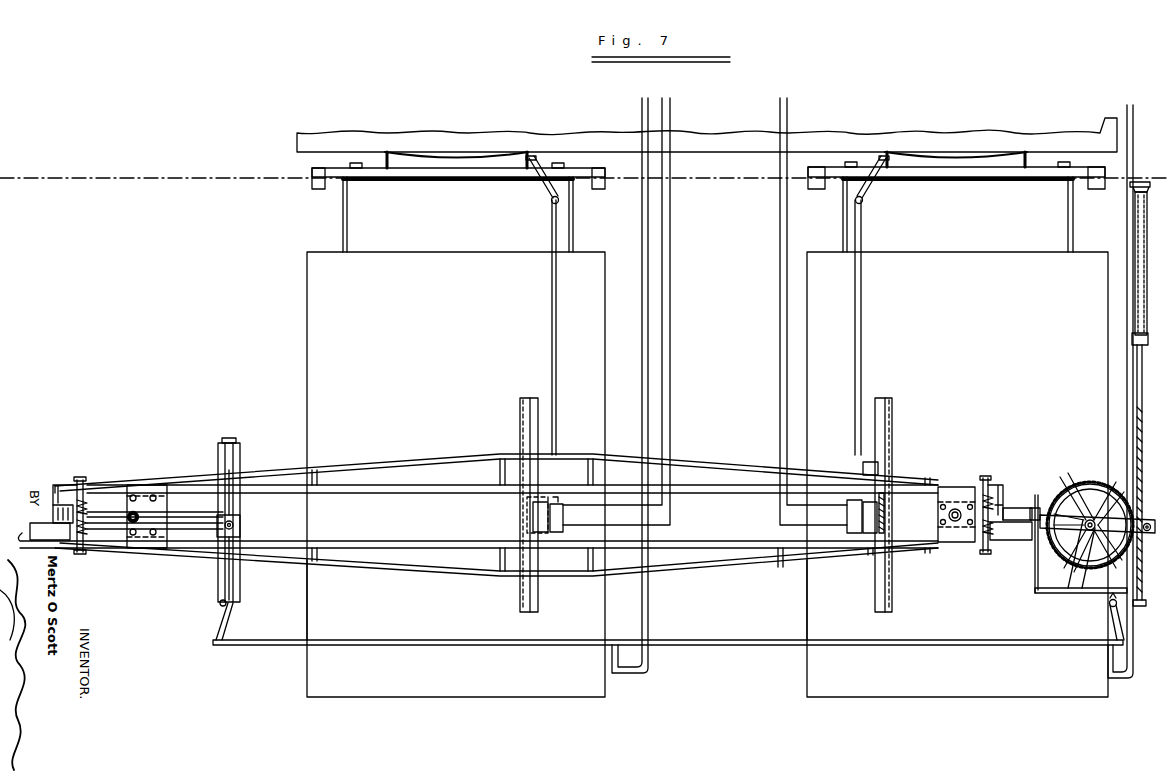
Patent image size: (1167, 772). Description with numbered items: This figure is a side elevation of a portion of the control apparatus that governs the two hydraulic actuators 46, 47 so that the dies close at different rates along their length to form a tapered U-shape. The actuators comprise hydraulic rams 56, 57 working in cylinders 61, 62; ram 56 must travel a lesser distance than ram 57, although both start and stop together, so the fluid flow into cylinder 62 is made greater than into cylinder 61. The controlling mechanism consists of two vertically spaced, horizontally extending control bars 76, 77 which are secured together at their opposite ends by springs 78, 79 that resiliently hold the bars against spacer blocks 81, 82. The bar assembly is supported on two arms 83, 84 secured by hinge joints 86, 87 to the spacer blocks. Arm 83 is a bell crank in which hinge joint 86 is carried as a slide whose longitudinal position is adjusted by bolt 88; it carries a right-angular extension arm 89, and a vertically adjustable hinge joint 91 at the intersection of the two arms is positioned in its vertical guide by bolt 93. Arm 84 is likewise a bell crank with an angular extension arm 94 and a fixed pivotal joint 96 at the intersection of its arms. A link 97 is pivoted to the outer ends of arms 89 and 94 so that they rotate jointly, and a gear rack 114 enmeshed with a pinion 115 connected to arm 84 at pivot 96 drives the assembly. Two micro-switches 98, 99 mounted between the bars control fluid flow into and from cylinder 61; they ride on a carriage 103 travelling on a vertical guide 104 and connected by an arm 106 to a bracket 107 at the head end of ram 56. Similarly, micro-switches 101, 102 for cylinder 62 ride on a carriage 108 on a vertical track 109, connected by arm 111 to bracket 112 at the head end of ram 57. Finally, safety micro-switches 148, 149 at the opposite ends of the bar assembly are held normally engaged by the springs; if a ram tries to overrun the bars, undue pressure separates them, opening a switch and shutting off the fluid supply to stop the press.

The hydraulic actuator 46 is at (303, 673).
The hydraulic actuator 47 is at (801, 674).
The hydraulic ram 56 is at (462, 209).
The hydraulic ram 57 is at (974, 209).
The cylinder 61 is at (307, 597).
The cylinder 62 is at (807, 592).
The control bar 76 is at (413, 487).
The control bar 77 is at (405, 542).
The spring 78 is at (90, 503).
The spring 79 is at (990, 500).
The spacer block 81 is at (159, 495).
The spacer block 82 is at (240, 462).
The arm 83 is at (185, 512).
The arm 84 is at (1037, 503).
The hinge joint 86 is at (134, 511).
The hinge joint 87 is at (955, 522).
The bolt 88 is at (103, 512).
The extension arm 89 is at (220, 606).
The hinge joint 91 is at (233, 524).
The bolt 93 is at (240, 452).
The extension arm 94 is at (1110, 599).
The pivotal joint 96 is at (1093, 521).
The link 97 is at (707, 640).
The micro-switch 98 is at (543, 515).
The micro-switch 99 is at (556, 532).
The micro-switch 101 is at (856, 533).
The micro-switch 102 is at (870, 534).
The carriage 103 is at (528, 518).
The vertical guide 104 is at (520, 412).
The arm 106 is at (552, 333).
The bracket 107 is at (537, 197).
The carriage 108 is at (886, 520).
The vertical track 109 is at (893, 420).
The arm 111 is at (862, 322).
The bracket 112 is at (873, 190).
The gear rack 114 is at (1138, 451).
The pinion 115 is at (1082, 487).
The micro-switch 148 is at (50, 531).
The micro-switch 149 is at (1015, 530).